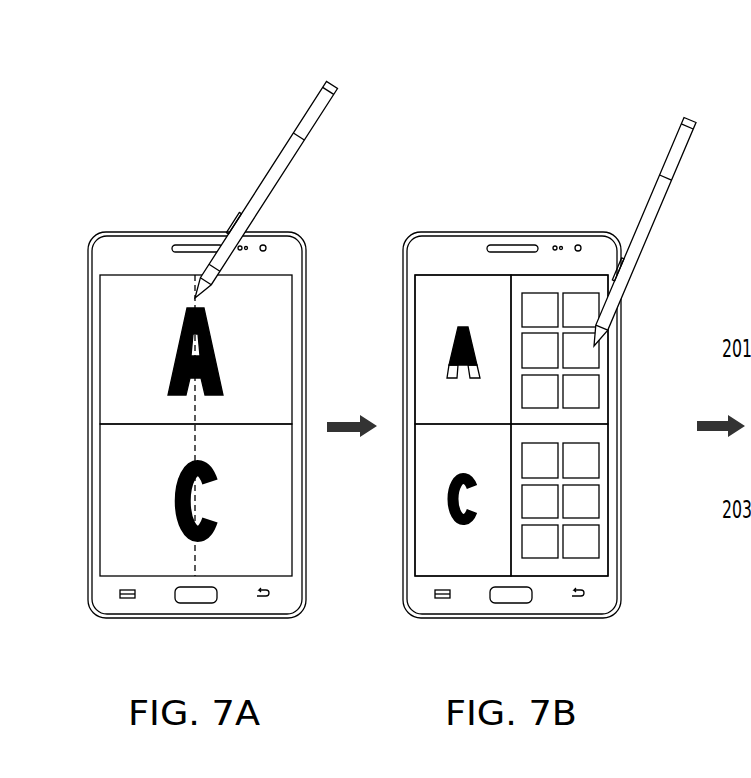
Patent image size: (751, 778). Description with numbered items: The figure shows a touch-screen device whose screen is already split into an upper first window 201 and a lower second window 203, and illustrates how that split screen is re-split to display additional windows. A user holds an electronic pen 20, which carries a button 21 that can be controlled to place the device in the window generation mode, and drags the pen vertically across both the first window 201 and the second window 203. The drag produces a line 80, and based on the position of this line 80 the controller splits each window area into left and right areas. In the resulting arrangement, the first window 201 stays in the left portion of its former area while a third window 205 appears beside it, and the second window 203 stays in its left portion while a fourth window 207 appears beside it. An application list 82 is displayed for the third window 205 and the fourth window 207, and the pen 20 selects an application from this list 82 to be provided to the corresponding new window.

In FIG. 7A, the electronic pen 20 is at (336, 84).
In FIG. 7B, the electronic pen 20 is at (699, 121).
In FIG. 7A, the button 21 is at (229, 224).
In FIG. 7B, the button 21 is at (616, 276).
In FIG. 7A, the line 80 is at (195, 455).
In FIG. 7B, the application list 82 is at (600, 352).
In FIG. 7A, the first window 201 is at (113, 350).
In FIG. 7B, the first window 201 is at (428, 350).
In FIG. 7A, the second window 203 is at (113, 508).
In FIG. 7B, the second window 203 is at (428, 508).
In FIG. 7B, the third window 205 is at (596, 420).
In FIG. 7B, the fourth window 207 is at (596, 572).